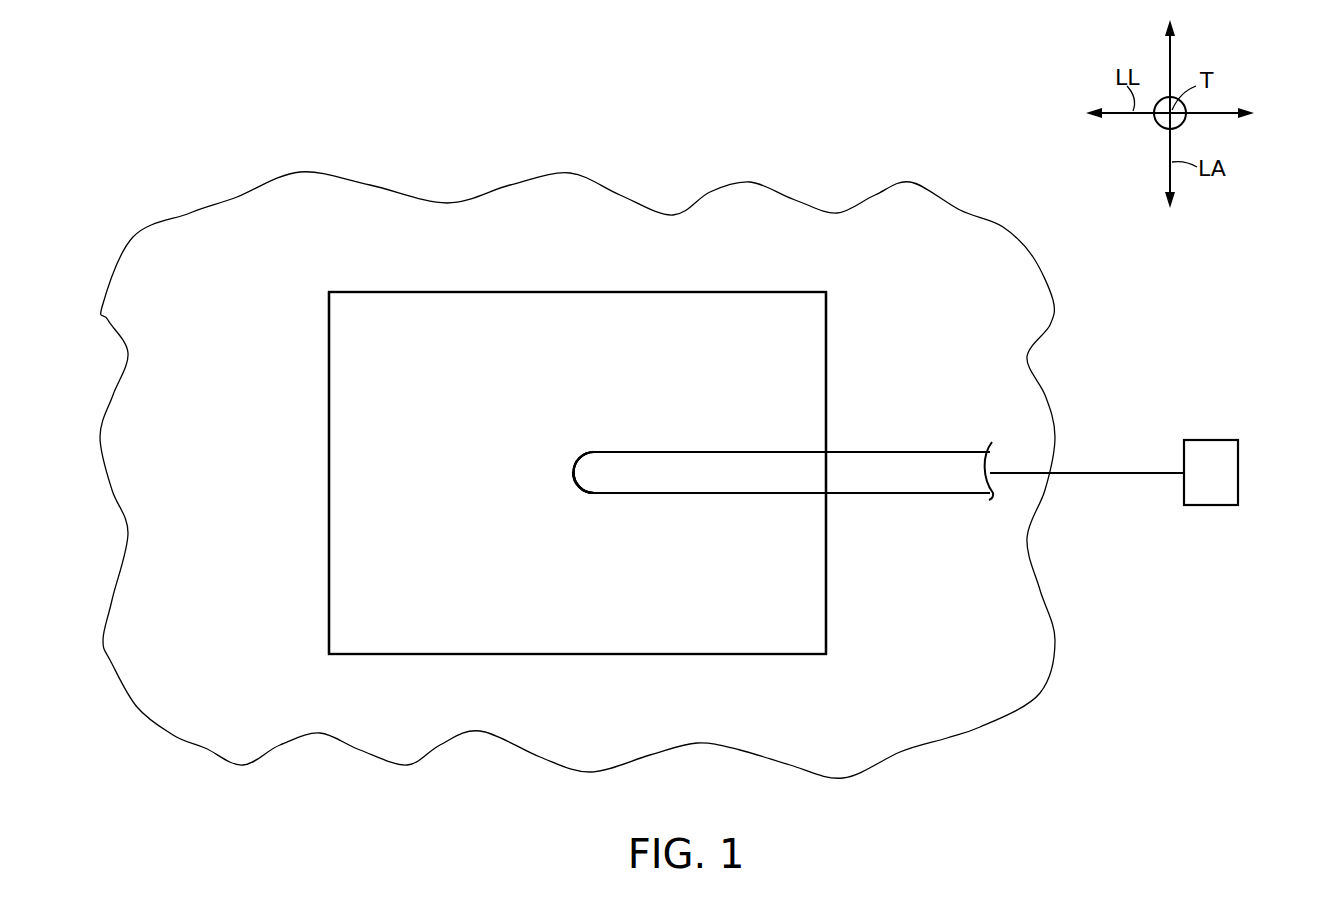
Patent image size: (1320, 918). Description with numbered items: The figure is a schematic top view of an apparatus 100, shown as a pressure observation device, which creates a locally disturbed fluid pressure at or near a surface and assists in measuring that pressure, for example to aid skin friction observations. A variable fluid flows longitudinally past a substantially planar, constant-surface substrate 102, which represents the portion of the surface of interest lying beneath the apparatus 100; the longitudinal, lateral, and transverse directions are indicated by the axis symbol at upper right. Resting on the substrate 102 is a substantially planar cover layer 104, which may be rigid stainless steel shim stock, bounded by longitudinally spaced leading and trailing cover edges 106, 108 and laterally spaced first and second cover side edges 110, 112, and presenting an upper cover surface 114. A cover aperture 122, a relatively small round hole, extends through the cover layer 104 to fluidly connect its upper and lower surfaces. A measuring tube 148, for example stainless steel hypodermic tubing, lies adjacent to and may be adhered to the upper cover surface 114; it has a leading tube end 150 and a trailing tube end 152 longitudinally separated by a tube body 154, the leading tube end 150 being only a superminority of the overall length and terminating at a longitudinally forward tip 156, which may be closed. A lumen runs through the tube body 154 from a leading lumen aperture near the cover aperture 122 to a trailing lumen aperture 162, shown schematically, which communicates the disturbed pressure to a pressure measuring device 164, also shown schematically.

The apparatus 100 is at (234, 219).
The substrate 102 is at (210, 694).
The cover layer 104 is at (481, 308).
The leading cover edge 106 is at (329, 470).
The trailing cover edge 108 is at (826, 356).
The first cover side edge 110 is at (712, 292).
The second cover side edge 112 is at (578, 655).
The upper cover surface 114 is at (403, 597).
The cover aperture 122 is at (594, 496).
The measuring tube 148 is at (780, 515).
The leading tube end 150 is at (679, 435).
The trailing tube end 152 is at (1131, 502).
The tube body 154 is at (950, 452).
The longitudinally forward tip 156 is at (597, 452).
The trailing lumen aperture 162 is at (1174, 453).
The pressure measuring device 164 is at (1228, 470).